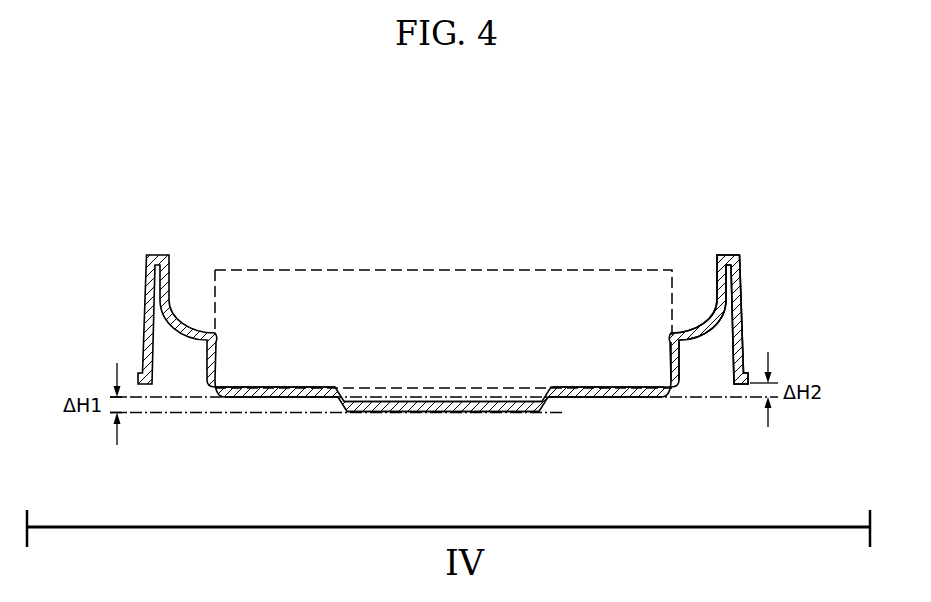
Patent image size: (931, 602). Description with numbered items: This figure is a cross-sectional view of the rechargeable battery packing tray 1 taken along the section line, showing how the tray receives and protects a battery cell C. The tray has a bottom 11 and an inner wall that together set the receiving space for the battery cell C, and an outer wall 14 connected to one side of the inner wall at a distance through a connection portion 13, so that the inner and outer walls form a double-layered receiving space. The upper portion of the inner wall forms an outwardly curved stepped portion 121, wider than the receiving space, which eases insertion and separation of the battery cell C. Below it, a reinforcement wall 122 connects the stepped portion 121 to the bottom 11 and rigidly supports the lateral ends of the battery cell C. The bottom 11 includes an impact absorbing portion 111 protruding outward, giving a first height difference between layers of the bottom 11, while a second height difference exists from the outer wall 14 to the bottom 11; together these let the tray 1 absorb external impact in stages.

The rechargeable battery packing tray 1 is at (455, 196).
The battery cell C is at (568, 268).
The bottom 11 is at (605, 398).
The impact absorbing portion 111 is at (472, 413).
The stepped portion 121 is at (708, 312).
The reinforcement wall 122 is at (683, 363).
The connection portion 13 is at (723, 261).
The outer wall 14 is at (741, 290).